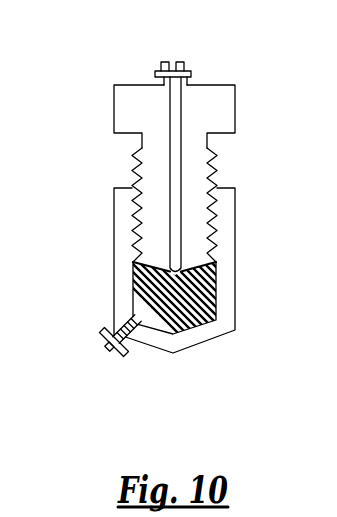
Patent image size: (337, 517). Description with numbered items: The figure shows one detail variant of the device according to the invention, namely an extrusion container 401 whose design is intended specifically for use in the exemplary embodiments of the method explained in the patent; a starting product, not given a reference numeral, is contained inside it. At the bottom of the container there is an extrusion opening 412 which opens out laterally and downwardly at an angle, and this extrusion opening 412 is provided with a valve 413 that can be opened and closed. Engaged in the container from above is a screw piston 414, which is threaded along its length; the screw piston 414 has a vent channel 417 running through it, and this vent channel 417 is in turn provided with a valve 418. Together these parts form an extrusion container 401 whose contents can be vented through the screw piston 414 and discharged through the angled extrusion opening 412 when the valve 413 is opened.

The extrusion container 401 is at (112, 222).
The extrusion opening 412 is at (105, 351).
The valve 413 is at (124, 357).
The screw piston 414 is at (128, 110).
The vent channel 417 is at (181, 165).
The valve 418 is at (197, 73).